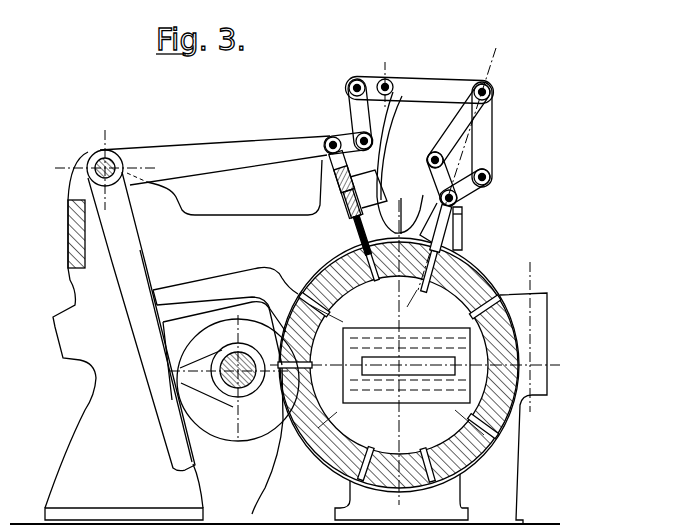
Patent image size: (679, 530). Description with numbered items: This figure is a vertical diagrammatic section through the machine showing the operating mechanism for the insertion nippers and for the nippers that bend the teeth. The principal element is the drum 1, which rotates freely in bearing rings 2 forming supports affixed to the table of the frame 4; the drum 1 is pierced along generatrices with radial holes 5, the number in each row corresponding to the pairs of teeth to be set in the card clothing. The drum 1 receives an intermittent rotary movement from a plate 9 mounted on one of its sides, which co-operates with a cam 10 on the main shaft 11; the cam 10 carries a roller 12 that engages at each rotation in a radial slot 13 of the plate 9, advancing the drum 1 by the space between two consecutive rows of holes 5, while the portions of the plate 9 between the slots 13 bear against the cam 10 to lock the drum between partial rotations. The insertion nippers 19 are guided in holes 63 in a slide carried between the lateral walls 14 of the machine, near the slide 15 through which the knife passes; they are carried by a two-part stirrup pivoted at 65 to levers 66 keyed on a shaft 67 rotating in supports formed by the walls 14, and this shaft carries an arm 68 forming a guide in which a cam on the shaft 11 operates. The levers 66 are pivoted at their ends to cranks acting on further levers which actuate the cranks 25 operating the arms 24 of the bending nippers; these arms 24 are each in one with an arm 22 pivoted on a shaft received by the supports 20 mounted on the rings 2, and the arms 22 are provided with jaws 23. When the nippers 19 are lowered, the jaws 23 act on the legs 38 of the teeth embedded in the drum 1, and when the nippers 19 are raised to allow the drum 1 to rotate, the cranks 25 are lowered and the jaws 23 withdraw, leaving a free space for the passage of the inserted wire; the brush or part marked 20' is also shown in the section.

The drum 1 is at (461, 296).
The bearing rings 2 is at (490, 276).
The frame 4 is at (93, 409).
The holes 5 is at (383, 310).
The plate 9 is at (143, 366).
The cam 10 is at (205, 393).
The main shaft 11 is at (373, 142).
The roller 12 is at (350, 97).
The radial slot 13 is at (434, 83).
The lateral walls 14 is at (390, 84).
The slide 15 is at (489, 91).
The insertion nippers 19 is at (378, 198).
The supports 20 is at (485, 227).
The brush 20' is at (408, 402).
The arms 22 is at (456, 223).
The jaws 23 is at (443, 247).
The arm 24 is at (428, 168).
The crank 25 is at (449, 124).
The legs 38 is at (432, 245).
The holes 63 is at (349, 211).
The pivot 65 is at (328, 139).
The levers 66 is at (192, 146).
The shaft 67 is at (110, 152).
The arm 68 is at (138, 250).